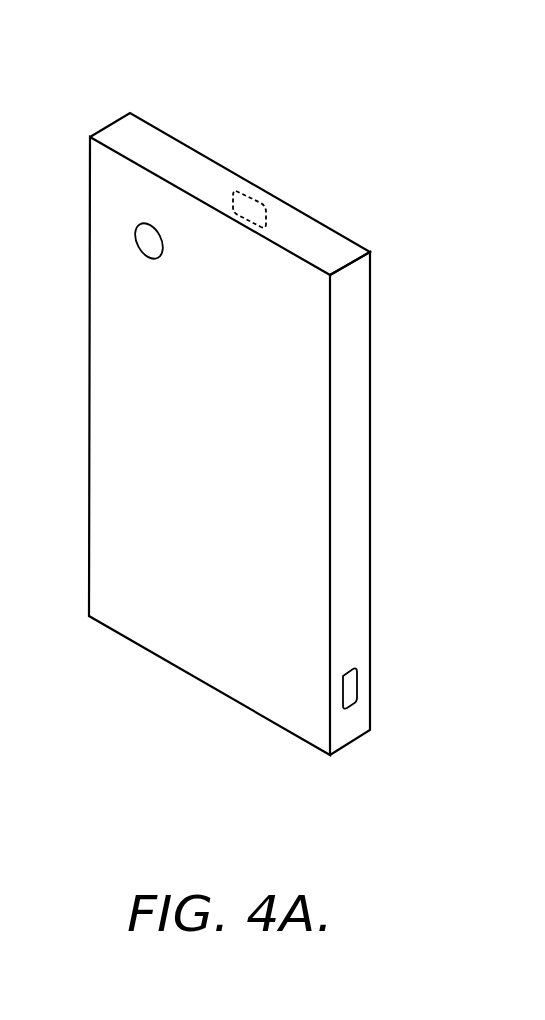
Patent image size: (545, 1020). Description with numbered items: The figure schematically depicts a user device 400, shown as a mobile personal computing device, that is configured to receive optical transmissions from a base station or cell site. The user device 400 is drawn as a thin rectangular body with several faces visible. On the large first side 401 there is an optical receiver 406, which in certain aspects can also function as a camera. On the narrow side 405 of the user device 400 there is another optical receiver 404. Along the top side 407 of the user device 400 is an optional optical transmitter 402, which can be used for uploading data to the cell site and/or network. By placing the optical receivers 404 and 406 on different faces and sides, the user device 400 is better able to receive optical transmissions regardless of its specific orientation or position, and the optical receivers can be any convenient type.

The user device 400 is at (288, 416).
The first side 401 is at (133, 625).
The optical transmitter 402 is at (254, 199).
The optical receiver 404 is at (357, 690).
The side 405 is at (363, 443).
The optical receiver 406 is at (155, 261).
The side 407 is at (168, 148).